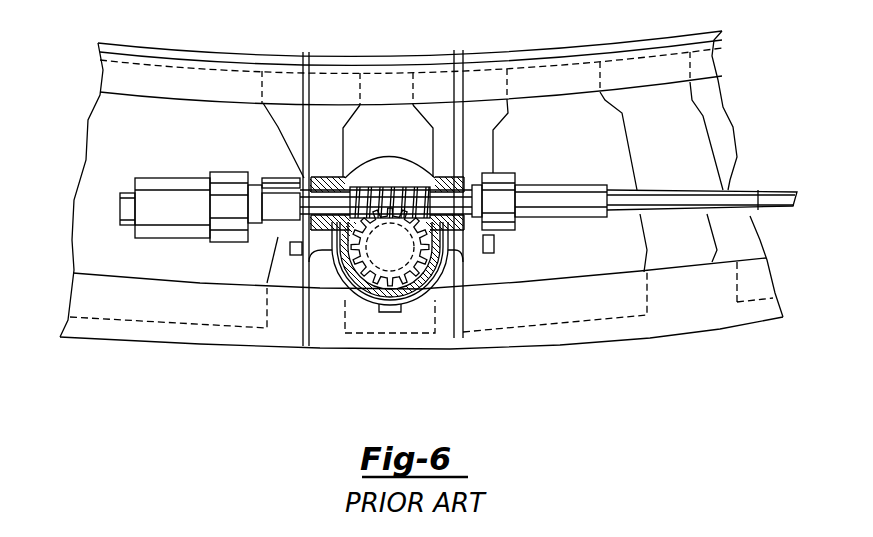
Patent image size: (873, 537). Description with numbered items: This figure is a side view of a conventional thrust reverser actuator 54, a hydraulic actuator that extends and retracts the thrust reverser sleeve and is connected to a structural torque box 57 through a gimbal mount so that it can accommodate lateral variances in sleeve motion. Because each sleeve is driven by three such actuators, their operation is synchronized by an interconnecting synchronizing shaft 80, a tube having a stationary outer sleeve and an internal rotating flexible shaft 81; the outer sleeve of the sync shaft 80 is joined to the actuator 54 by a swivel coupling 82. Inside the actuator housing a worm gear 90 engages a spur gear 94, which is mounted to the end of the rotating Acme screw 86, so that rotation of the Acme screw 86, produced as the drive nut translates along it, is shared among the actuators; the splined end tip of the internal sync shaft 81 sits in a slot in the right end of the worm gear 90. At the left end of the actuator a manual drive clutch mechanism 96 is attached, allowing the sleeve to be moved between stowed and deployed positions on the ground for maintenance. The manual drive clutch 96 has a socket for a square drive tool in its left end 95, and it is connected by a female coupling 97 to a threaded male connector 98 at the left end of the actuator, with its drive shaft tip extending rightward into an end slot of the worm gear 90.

The hydraulic actuator 54 is at (436, 288).
The structural torque box 57 is at (85, 43).
The synchronizing shaft 80 is at (724, 188).
The internal rotating flexible shaft 81 is at (788, 190).
The swivel coupling 82 is at (507, 174).
The Acme screw 86 is at (375, 259).
The worm gear 90 is at (391, 177).
The spur gear 94 is at (419, 297).
The left end of manual drive clutch 95 is at (119, 212).
The manual drive clutch mechanism 96 is at (173, 186).
The female coupling 97 is at (270, 178).
The threaded male connector 98 is at (279, 177).